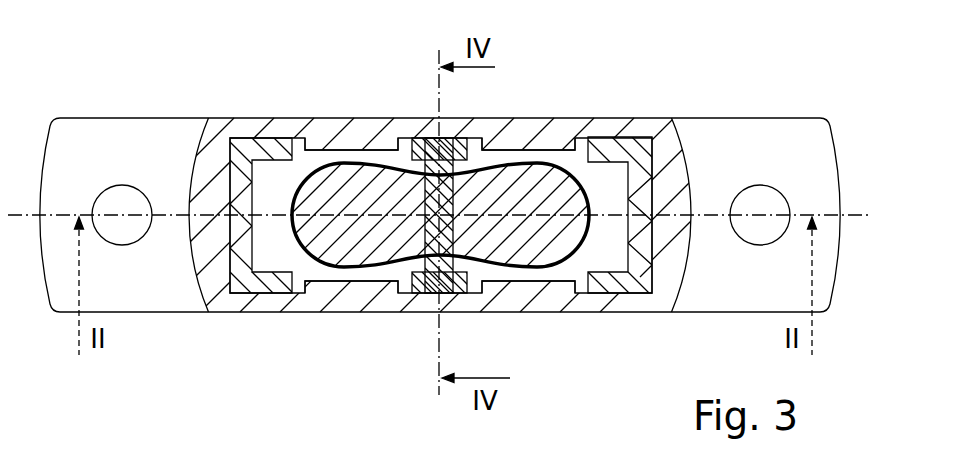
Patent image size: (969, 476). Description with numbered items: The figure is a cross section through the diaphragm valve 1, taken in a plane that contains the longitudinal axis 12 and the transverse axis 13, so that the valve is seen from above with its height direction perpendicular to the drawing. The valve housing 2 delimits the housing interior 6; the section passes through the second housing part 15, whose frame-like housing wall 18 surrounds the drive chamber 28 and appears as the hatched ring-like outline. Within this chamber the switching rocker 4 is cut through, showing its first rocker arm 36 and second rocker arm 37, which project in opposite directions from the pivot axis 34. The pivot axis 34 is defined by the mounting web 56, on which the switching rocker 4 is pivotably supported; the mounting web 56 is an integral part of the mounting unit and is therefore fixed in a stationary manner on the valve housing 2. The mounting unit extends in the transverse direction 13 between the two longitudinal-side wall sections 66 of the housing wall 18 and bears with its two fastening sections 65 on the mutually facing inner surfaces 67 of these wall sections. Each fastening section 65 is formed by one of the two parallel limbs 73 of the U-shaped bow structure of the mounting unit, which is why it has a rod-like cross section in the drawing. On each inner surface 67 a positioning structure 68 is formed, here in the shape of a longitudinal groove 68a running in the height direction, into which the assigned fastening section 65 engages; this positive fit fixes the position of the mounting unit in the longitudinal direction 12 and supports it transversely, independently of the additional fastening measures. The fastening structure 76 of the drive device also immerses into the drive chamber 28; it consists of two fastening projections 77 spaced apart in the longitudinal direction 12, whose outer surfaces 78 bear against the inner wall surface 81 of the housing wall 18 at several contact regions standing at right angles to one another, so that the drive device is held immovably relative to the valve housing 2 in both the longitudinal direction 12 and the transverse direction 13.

The diaphragm valve 1 is at (770, 84).
The valve housing 2 is at (397, 230).
The second housing part 15 is at (397, 230).
The switching rocker 4 is at (332, 237).
The housing interior 6 is at (469, 230).
The longitudinal axis 12 is at (862, 213).
The transverse axis 13 is at (438, 198).
The pivot axis 34 is at (451, 138).
The housing wall 18 is at (206, 304).
The drive chamber 28 is at (397, 230).
The first rocker arm 36 is at (422, 286).
The second rocker arm 37 is at (422, 286).
The mounting web 56 is at (438, 198).
The fastening sections 65 is at (464, 211).
The limbs 73 is at (412, 138).
The longitudinal-side wall sections 66 is at (469, 230).
The inner surfaces 67 is at (469, 230).
The positioning structure 68 is at (316, 134).
The longitudinal groove 68a is at (464, 211).
The fastening structure 76 is at (397, 230).
The fastening projections 77 is at (426, 274).
The outer surfaces 78 is at (426, 274).
The inner wall surface 81 is at (263, 281).